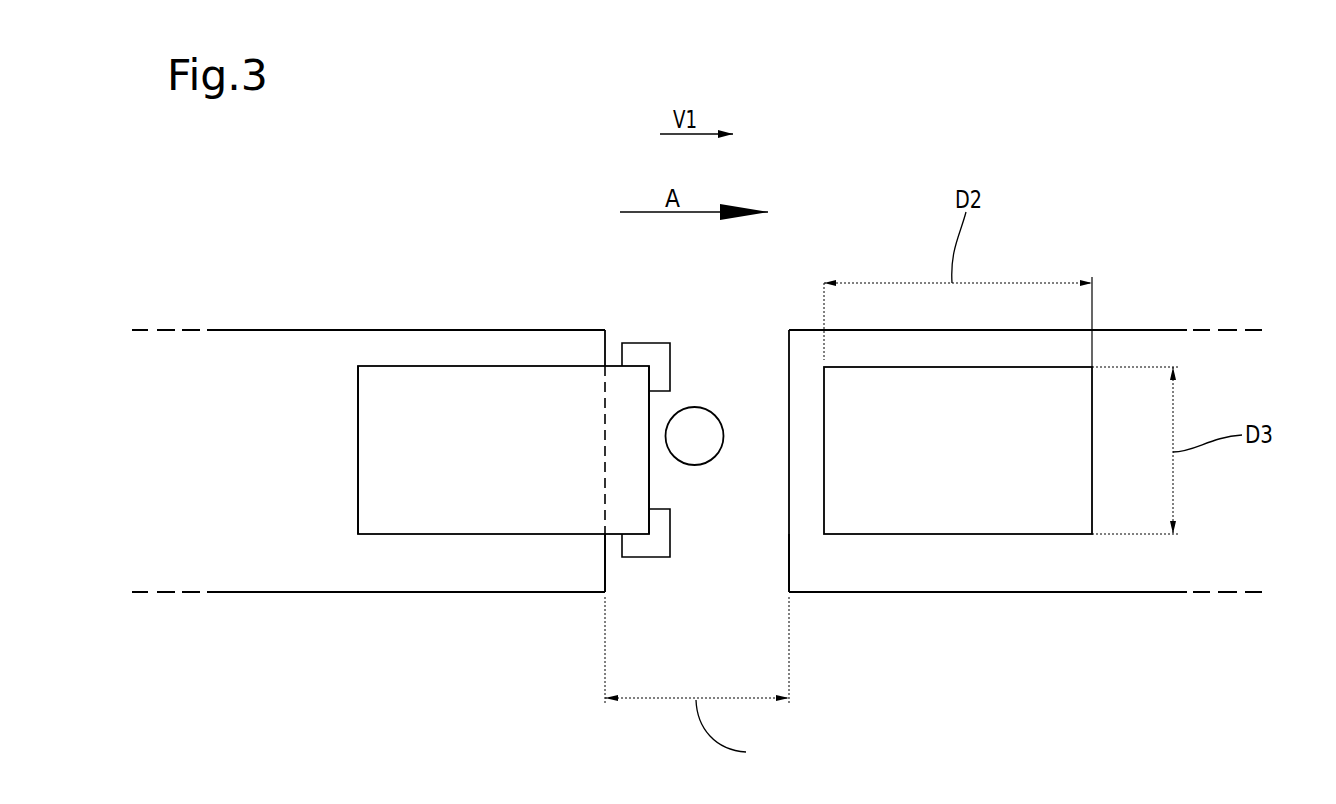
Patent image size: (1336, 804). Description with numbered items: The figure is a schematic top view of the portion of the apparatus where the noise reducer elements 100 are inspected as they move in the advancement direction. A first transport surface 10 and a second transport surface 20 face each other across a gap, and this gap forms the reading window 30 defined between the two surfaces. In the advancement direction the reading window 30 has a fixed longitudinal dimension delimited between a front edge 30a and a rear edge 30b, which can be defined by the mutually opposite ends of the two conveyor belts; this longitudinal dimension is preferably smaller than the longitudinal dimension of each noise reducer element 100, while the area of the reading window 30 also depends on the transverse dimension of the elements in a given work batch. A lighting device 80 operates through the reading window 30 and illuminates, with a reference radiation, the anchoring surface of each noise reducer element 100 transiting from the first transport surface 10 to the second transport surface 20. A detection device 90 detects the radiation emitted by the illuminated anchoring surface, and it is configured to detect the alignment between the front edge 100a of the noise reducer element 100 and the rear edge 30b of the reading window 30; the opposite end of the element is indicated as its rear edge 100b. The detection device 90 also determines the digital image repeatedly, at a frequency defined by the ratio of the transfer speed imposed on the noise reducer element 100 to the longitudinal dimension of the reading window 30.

The first transport surface 10 is at (422, 572).
The second transport surface 20 is at (1068, 563).
The reading window 30 is at (720, 593).
The front edge 30a is at (789, 558).
The rear edge 30b is at (605, 577).
The lighting device 80 is at (653, 357).
The detection device 90 is at (713, 437).
The noise reducer element 100 is at (459, 356).
The front edge of the noise reducer element 100a is at (649, 408).
The second end of block member 100b is at (357, 428).